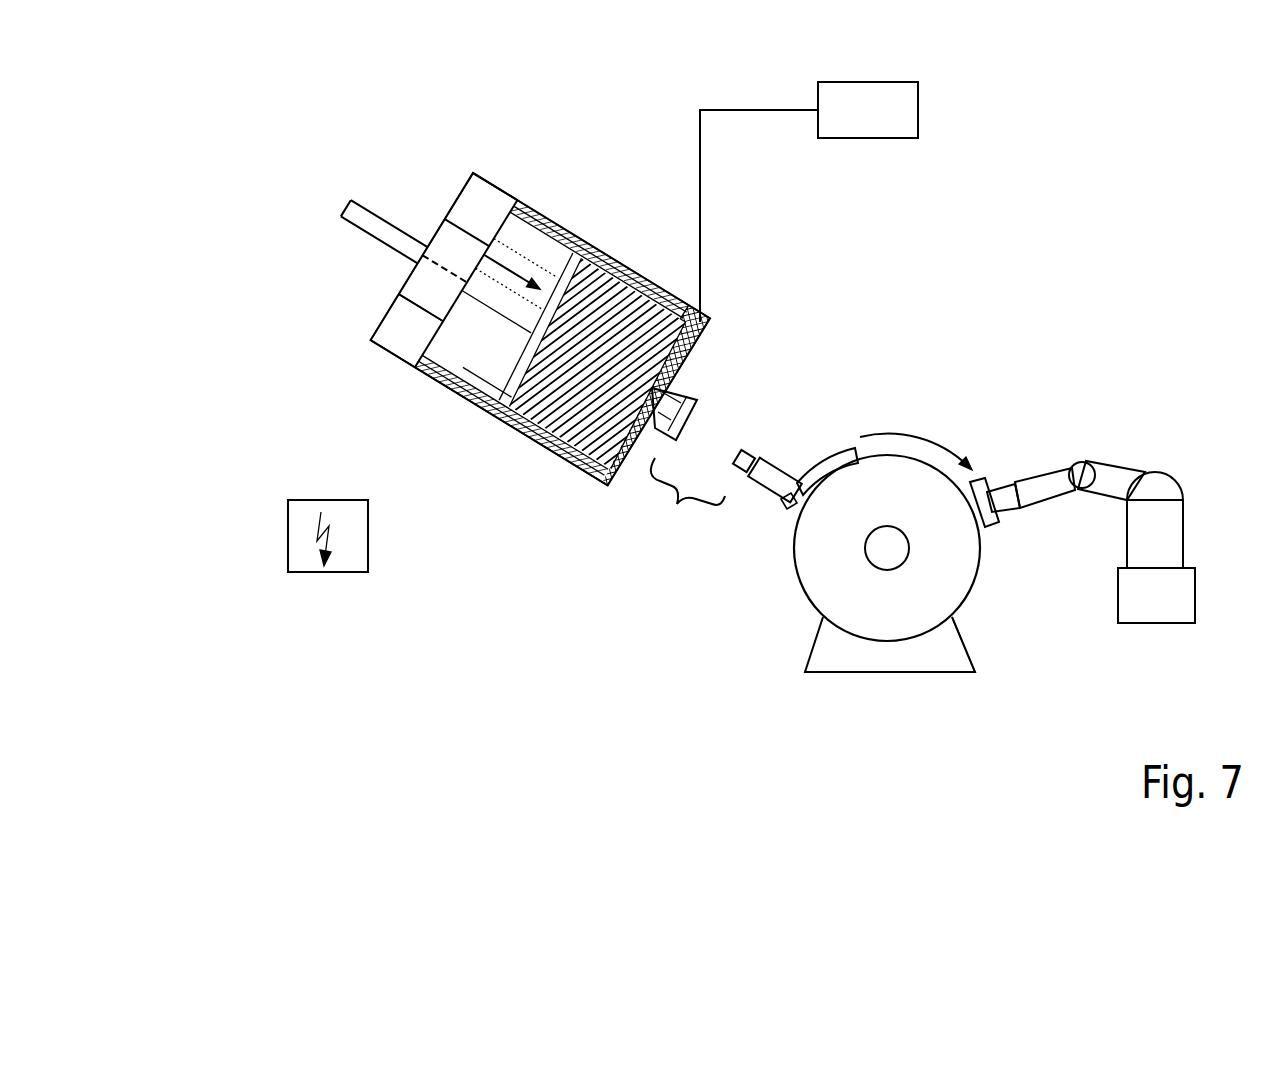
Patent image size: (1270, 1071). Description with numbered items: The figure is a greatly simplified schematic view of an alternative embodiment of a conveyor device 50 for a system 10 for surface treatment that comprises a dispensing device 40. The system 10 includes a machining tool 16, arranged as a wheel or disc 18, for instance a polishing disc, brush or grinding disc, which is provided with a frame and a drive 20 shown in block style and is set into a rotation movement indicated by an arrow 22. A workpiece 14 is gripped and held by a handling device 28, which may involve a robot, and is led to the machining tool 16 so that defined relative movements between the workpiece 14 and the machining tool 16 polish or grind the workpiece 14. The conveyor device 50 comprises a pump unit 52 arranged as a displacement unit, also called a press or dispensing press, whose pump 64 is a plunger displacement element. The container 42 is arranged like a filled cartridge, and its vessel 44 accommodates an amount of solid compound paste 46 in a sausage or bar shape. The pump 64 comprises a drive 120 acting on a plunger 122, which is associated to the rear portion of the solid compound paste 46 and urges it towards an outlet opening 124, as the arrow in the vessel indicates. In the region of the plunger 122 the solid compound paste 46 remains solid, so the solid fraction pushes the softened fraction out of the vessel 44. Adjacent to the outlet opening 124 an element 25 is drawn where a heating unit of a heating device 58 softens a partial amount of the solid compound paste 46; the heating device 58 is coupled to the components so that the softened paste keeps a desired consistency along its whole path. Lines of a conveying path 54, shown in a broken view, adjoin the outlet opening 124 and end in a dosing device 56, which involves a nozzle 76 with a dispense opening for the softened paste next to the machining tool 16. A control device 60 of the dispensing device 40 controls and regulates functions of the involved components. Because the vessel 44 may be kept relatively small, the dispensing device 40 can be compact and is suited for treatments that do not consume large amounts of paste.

The system 10 is at (1028, 251).
The workpiece 14 is at (996, 475).
The machining tool 16 is at (870, 660).
The wheel or disc 18 is at (962, 577).
The drive 20 is at (950, 655).
The arrow 22 is at (905, 430).
The end plate 25 is at (703, 344).
The handling device 28 is at (1146, 430).
The dispensing device 40 is at (245, 195).
The container 42 is at (576, 215).
The vessel 44 is at (500, 424).
The solid compound paste 46 is at (609, 340).
The conveyor device 50 is at (587, 508).
The pump unit 52 is at (423, 200).
The conveying path 54 is at (680, 519).
The dosing device 56 is at (757, 562).
The heating device 58 is at (952, 104).
The control device 60 is at (258, 506).
The pump 64 is at (432, 290).
The nozzle 76 is at (782, 462).
The drive 120 is at (442, 277).
The plunger 122 is at (500, 352).
The outlet opening 124 is at (716, 381).